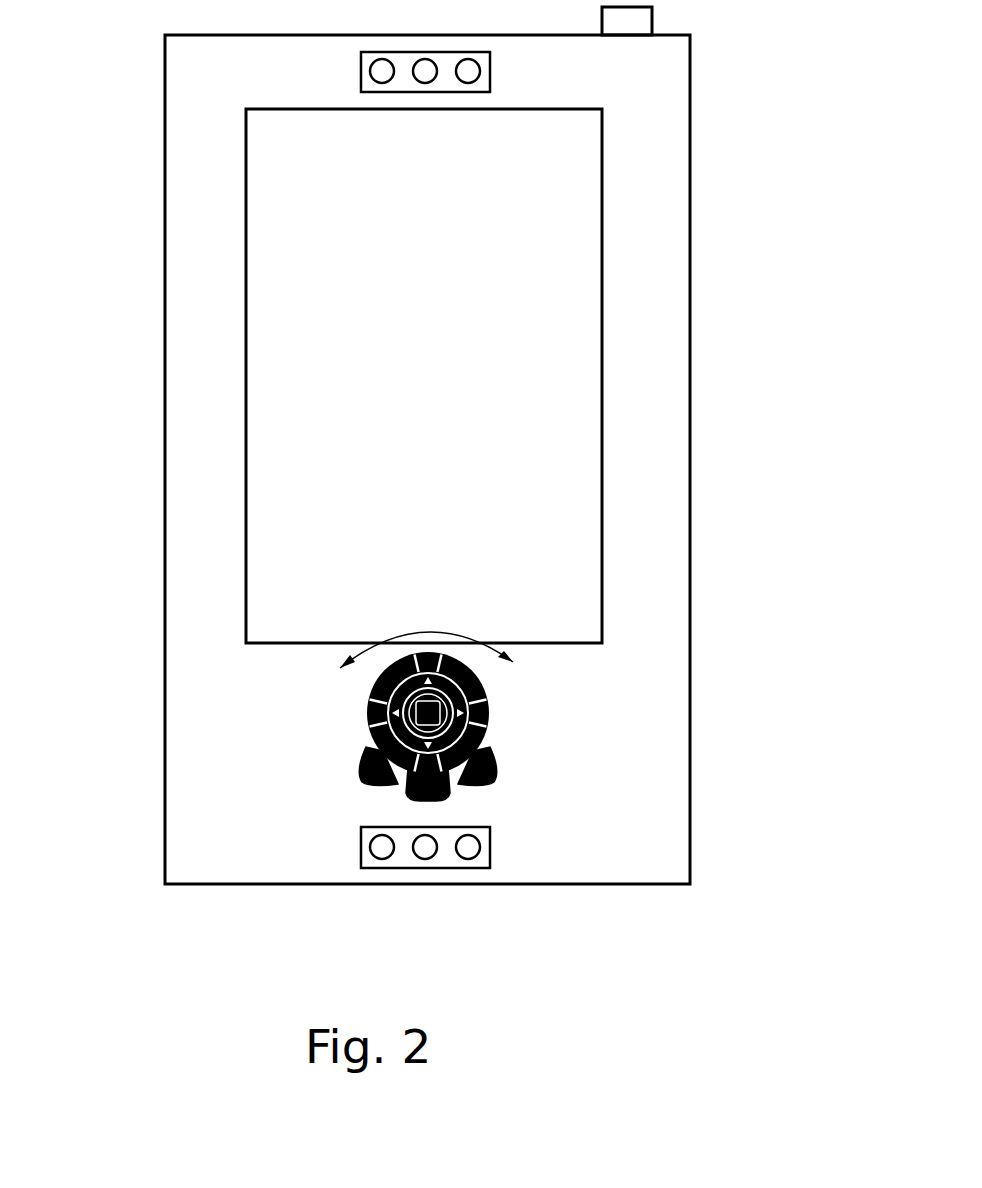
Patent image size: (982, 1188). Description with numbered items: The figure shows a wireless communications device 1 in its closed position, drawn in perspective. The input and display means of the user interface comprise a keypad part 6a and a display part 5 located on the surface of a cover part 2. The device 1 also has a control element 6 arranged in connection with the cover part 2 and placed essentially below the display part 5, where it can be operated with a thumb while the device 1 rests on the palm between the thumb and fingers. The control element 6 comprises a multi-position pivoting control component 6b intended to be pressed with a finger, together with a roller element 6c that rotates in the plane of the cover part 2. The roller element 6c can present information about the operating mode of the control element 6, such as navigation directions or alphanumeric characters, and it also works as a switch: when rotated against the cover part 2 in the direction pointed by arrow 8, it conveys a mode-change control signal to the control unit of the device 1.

The wireless communications device 1 is at (453, 445).
The cover part 2 is at (690, 477).
The display part 5 is at (282, 418).
The control element 6 is at (449, 709).
The keypad part 6a is at (595, 738).
The multi-position pivoting control component 6b is at (601, 668).
The roller element 6c is at (267, 684).
The arrow 8 is at (426, 630).